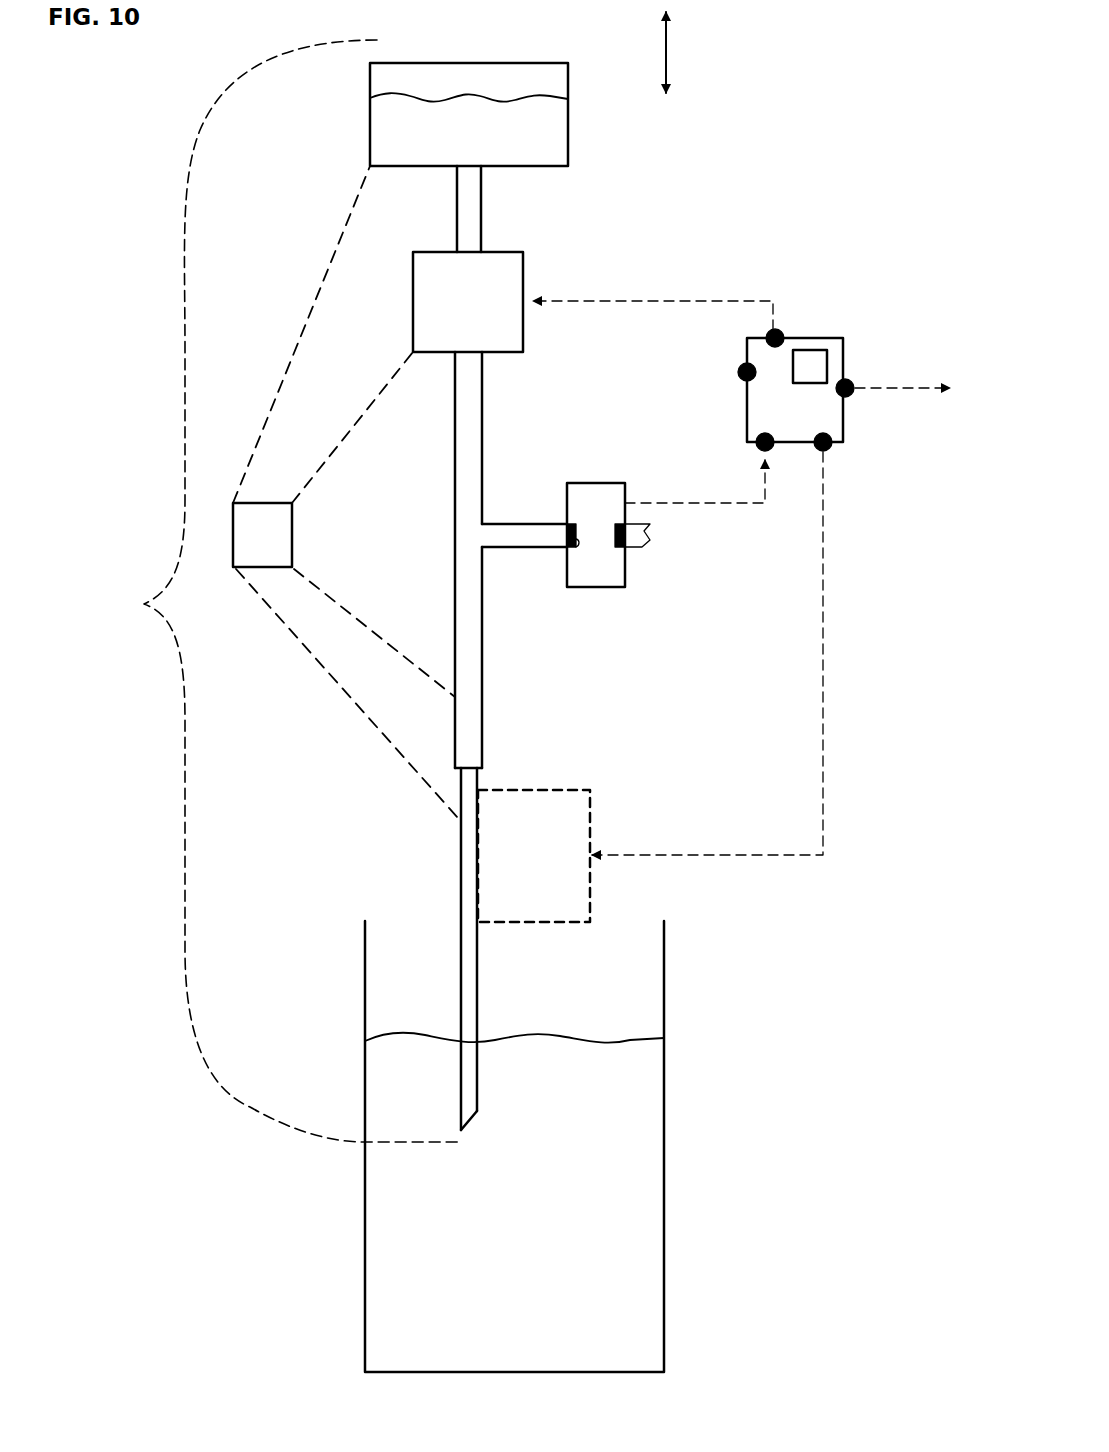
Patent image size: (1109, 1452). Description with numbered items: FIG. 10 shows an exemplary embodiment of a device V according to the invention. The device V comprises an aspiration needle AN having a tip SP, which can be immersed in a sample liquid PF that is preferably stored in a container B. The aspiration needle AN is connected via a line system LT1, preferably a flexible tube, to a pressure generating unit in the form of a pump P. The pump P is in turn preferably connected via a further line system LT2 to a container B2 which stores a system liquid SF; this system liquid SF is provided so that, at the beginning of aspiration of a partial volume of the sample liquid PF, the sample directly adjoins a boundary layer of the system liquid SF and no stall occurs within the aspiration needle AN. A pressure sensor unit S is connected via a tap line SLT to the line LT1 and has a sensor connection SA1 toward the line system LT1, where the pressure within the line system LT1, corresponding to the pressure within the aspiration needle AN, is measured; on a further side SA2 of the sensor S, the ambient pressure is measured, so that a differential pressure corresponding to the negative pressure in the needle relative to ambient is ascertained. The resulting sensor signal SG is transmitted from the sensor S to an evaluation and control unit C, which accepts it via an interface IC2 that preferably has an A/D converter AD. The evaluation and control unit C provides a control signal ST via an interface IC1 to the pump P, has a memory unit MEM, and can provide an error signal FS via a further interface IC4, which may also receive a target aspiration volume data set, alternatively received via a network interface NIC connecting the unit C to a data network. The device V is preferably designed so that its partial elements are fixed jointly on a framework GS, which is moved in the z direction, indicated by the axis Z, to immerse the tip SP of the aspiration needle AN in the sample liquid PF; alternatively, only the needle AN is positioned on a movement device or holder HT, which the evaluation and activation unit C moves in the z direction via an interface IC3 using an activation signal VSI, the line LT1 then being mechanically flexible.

The container B2 is at (372, 86).
The system liquid SF is at (550, 128).
The further line system LT2 is at (482, 197).
The pump P is at (468, 302).
The control signal ST is at (653, 300).
The evaluation and control unit C is at (798, 338).
The memory unit MEM is at (810, 350).
The error signal FS is at (893, 388).
The interface IC1 is at (768, 334).
The network interface NIC is at (740, 372).
The analog-digital converter AD is at (760, 440).
The interface IC2 is at (758, 455).
The interface IC3 is at (832, 452).
The further interface IC4 is at (852, 396).
The pressure sensor unit S is at (596, 483).
The tap line SLT is at (503, 522).
The sensor connection SA1 is at (573, 557).
The further side SA2 is at (621, 557).
The sensor signal SG is at (690, 505).
The activation signal VSI is at (826, 660).
The line system LT1 is at (482, 662).
The aspiration needle AN is at (460, 855).
The holder HT is at (534, 856).
The framework GS is at (345, 492).
The device V is at (144, 604).
The container B is at (664, 980).
The sample liquid PF is at (640, 1150).
The tip SP is at (463, 1133).
The vertical axis Z is at (668, 50).